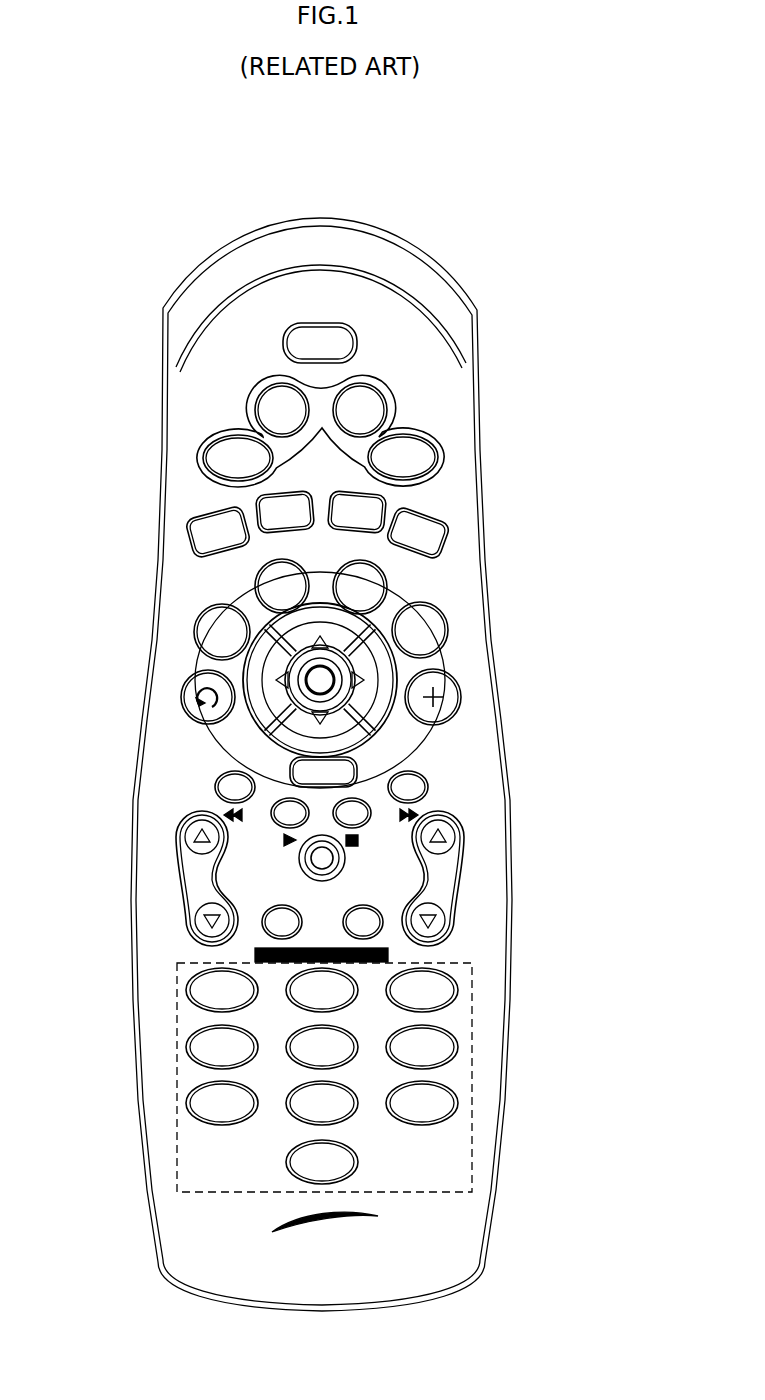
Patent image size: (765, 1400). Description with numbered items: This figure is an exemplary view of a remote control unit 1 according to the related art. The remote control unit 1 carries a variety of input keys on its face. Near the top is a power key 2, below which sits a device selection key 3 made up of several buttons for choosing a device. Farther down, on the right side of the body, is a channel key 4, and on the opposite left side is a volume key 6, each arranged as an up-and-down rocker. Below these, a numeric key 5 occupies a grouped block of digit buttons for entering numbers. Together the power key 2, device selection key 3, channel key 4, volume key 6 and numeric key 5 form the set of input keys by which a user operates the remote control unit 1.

The remote control unit 1 is at (604, 237).
The power key 2 is at (352, 345).
The device selection key 3 is at (392, 400).
The channel key 4 is at (458, 860).
The numeric key 5 is at (472, 1067).
The volume key 6 is at (180, 878).